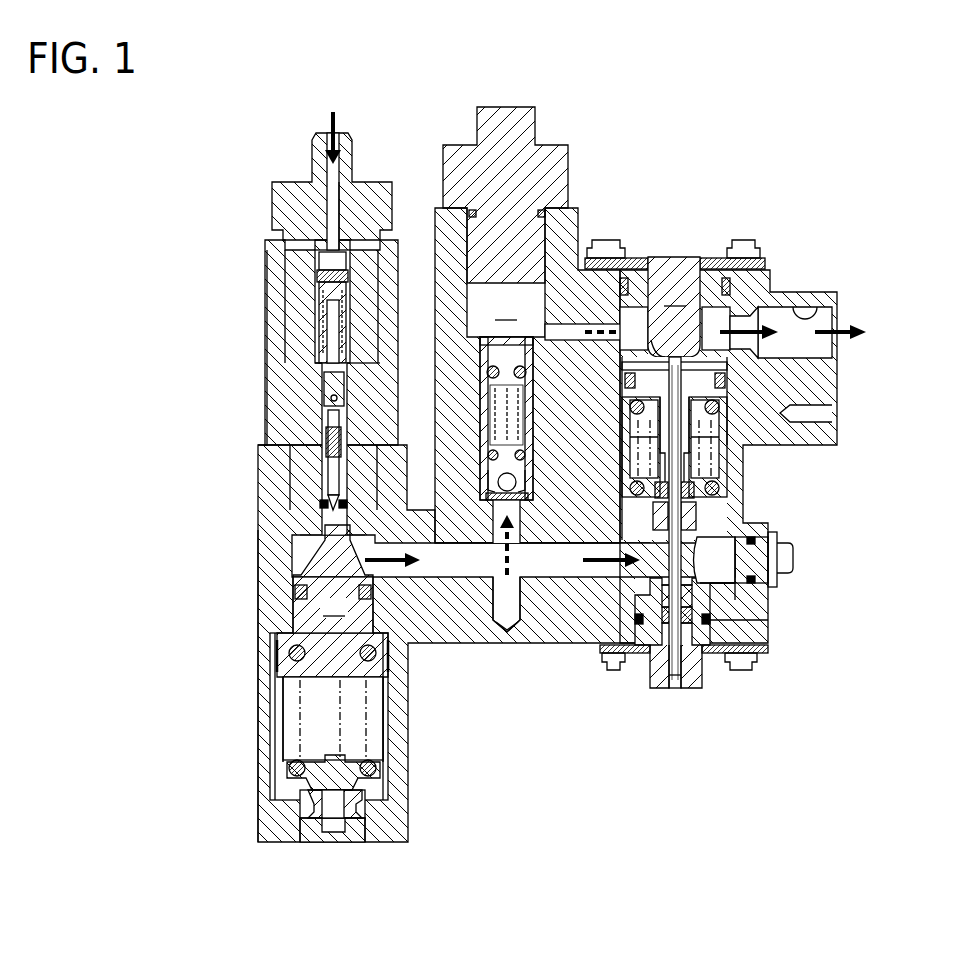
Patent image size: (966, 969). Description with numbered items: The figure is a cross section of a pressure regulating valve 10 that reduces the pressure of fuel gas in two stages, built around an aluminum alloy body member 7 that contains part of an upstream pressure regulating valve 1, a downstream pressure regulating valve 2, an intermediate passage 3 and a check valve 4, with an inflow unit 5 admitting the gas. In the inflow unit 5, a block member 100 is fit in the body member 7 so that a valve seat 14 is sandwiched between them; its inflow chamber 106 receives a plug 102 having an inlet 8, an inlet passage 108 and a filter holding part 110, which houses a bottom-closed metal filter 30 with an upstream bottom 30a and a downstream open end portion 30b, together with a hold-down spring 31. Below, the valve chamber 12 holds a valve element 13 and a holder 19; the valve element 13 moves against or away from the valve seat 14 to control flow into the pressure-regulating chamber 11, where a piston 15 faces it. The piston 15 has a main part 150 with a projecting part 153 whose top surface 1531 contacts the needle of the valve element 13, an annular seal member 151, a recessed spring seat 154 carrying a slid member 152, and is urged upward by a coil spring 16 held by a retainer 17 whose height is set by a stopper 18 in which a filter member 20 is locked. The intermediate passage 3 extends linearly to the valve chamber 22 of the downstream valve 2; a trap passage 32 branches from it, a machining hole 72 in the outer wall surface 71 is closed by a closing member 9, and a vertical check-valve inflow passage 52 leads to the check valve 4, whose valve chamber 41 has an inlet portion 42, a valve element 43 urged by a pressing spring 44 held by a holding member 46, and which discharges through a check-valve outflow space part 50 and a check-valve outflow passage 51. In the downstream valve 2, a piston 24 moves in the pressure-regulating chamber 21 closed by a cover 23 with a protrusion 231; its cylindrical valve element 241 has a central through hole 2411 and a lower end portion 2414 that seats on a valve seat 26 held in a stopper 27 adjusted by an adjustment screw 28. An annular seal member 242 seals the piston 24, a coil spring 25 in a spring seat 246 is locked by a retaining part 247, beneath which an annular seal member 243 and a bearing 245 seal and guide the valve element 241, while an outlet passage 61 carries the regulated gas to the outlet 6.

The upstream pressure regulating valve 1 is at (253, 626).
The downstream pressure regulating valve 2 is at (675, 266).
The intermediate passage 3 is at (478, 568).
The check valve 4 is at (472, 447).
The inflow unit 5 is at (293, 327).
The outlet 6 is at (807, 294).
The body member 7 is at (500, 638).
The inlet 8 is at (340, 123).
The closing member 9 is at (795, 558).
The pressure regulating valve 10 is at (825, 210).
The pressure-regulating chamber 11 is at (298, 578).
The valve chamber 12 is at (326, 505).
The valve element 13 is at (268, 468).
The valve seat 14 is at (320, 532).
The piston 15 is at (276, 605).
The coil spring 16 is at (369, 762).
The retainer 17 is at (347, 760).
The stopper 18 is at (390, 825).
The holder 19 is at (330, 414).
The filter member 20 is at (355, 800).
The pressure-regulating chamber 21 is at (632, 325).
The valve chamber 22 is at (637, 610).
The cover 23 is at (675, 307).
The piston 24 is at (701, 358).
The coil spring 25 is at (826, 413).
The valve seat 26 is at (745, 605).
The stopper 27 is at (693, 682).
The adjustment screw 28 is at (677, 688).
The filter 30 is at (313, 291).
The bottom 30a is at (355, 260).
The open end portion 30b is at (330, 370).
The hold-down spring 31 is at (318, 286).
The trap passage 32 is at (524, 633).
The valve chamber 41 is at (528, 482).
The inlet portion 42 is at (526, 511).
The valve element 43 is at (528, 457).
The pressing spring 44 is at (483, 384).
The holding member 46 is at (527, 373).
The check-valve outflow space part 50 is at (505, 214).
The check-valve outflow passage 51 is at (563, 327).
The check-valve inflow passage 52 is at (492, 524).
The outlet passage 61 is at (786, 313).
The outer wall surface 71 is at (768, 630).
The machining hole 72 is at (748, 578).
The block member 100 is at (282, 258).
The plug 102 is at (324, 175).
The inflow chamber 106 is at (374, 362).
The inlet passage 108 is at (340, 200).
The filter holding part 110 is at (325, 300).
The main part 150 is at (300, 690).
The annular seal member 151 is at (292, 640).
The slid member 152 is at (282, 660).
The projecting part 153 is at (303, 590).
The spring seat 154 is at (290, 713).
The protrusion 231 is at (651, 352).
The valve element 241 is at (760, 452).
The annular seal member 242 is at (800, 398).
The annular seal member 243 is at (745, 500).
The bearing 245 is at (738, 530).
The spring seat 246 is at (624, 400).
The retaining part 247 is at (748, 480).
The top surface 1531 is at (345, 525).
The through hole 2411 is at (628, 436).
The lower end portion 2414 is at (636, 620).